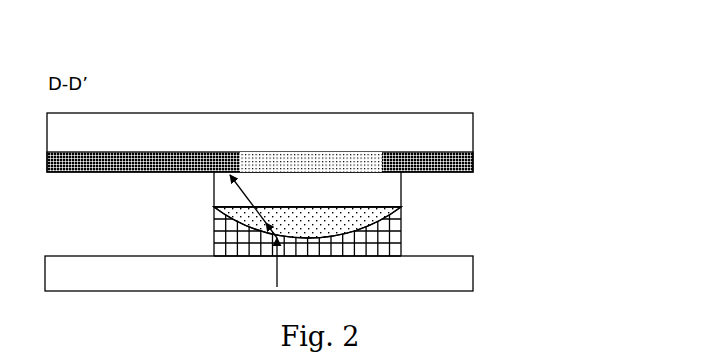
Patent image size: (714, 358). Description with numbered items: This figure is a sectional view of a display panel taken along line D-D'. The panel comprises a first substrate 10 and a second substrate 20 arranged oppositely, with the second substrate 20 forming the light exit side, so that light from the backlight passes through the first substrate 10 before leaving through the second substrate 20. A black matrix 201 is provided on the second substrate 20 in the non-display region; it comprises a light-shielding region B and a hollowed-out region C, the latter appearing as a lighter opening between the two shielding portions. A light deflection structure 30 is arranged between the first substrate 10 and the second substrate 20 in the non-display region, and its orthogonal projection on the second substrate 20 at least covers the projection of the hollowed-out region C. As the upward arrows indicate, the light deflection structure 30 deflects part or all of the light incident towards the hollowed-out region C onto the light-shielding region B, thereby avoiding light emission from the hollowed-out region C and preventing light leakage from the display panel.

The first substrate 10 is at (458, 263).
The second substrate 20 is at (458, 129).
The black matrix 201 is at (260, 89).
The light deflection structure 30 is at (401, 207).
The light-shielding region B is at (190, 158).
The hollowed-out region C is at (314, 162).